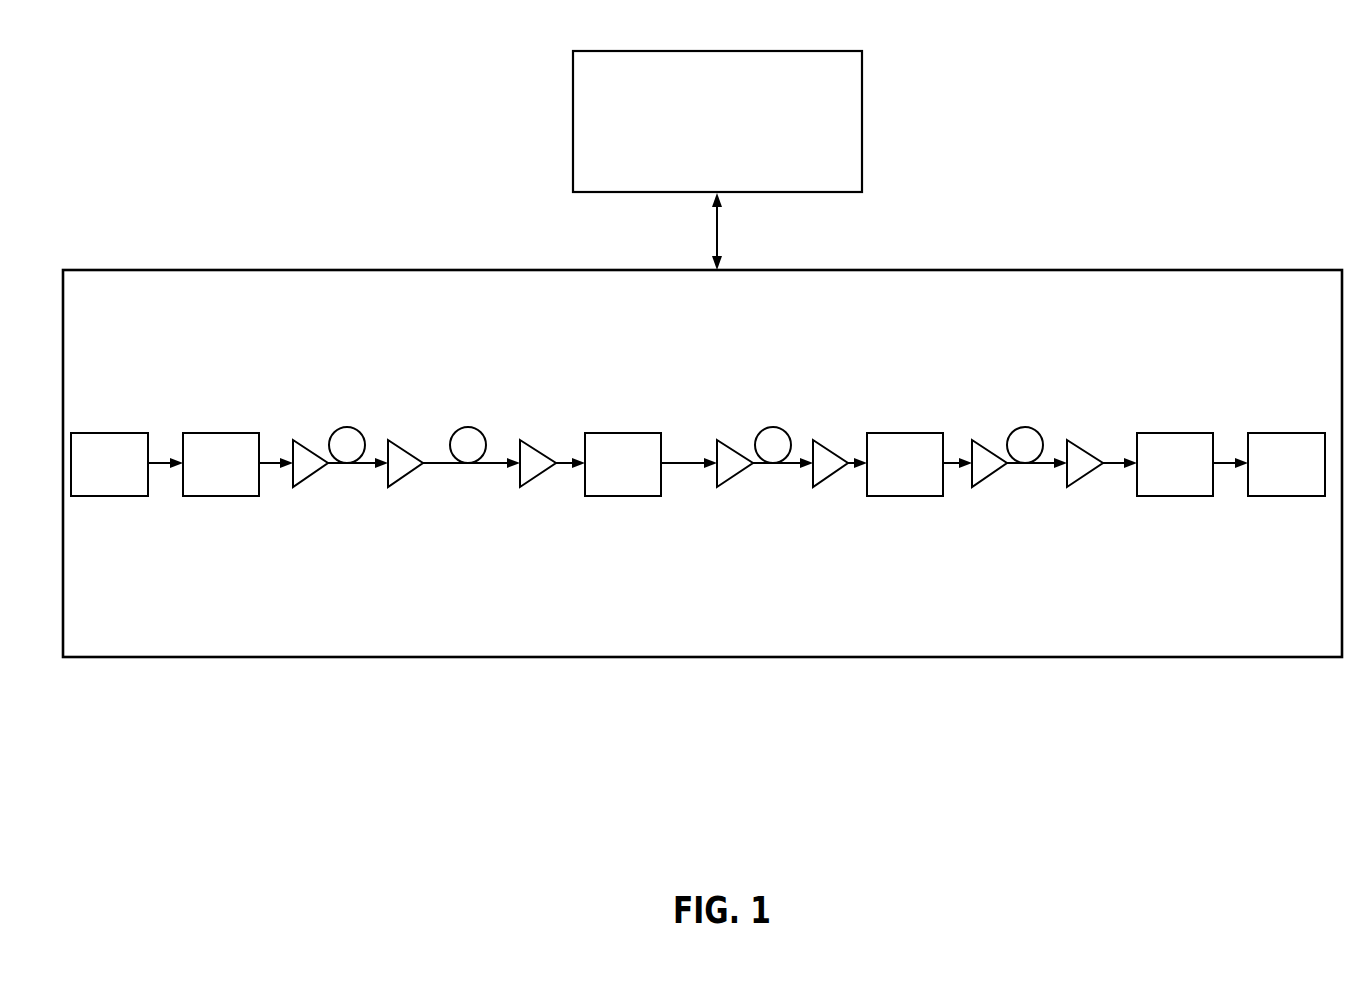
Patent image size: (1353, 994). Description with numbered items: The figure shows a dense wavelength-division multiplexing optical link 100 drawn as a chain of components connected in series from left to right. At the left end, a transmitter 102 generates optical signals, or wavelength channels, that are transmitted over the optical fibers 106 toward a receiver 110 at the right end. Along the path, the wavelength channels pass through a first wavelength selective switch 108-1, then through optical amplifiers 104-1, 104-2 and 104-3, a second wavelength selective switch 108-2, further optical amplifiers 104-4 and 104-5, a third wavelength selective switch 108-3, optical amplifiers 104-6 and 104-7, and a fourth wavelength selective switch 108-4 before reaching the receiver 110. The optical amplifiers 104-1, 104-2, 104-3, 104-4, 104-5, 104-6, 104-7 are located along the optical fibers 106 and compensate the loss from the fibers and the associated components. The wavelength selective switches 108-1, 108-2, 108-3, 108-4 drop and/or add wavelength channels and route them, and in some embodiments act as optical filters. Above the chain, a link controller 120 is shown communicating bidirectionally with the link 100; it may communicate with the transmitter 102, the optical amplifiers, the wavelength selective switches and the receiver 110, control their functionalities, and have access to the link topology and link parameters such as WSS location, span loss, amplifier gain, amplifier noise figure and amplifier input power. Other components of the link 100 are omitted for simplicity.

The DWDM optical link 100 is at (135, 50).
The transmitter 102 is at (99, 420).
The optical amplifier 104-1 is at (311, 492).
The optical amplifier 104-2 is at (406, 492).
The optical amplifier 104-3 is at (539, 492).
The optical amplifier 104-4 is at (737, 492).
The optical amplifier 104-5 is at (832, 492).
The optical amplifier 104-6 is at (990, 492).
The optical amplifier 104-7 is at (1086, 492).
The optical fibers 106 is at (344, 414).
The wavelength selective switch 108-1 is at (217, 420).
The wavelength selective switch 108-2 is at (622, 420).
The wavelength selective switch 108-3 is at (895, 420).
The wavelength selective switch 108-4 is at (1171, 420).
The receiver 110 is at (1285, 420).
The link controller 120 is at (740, 160).